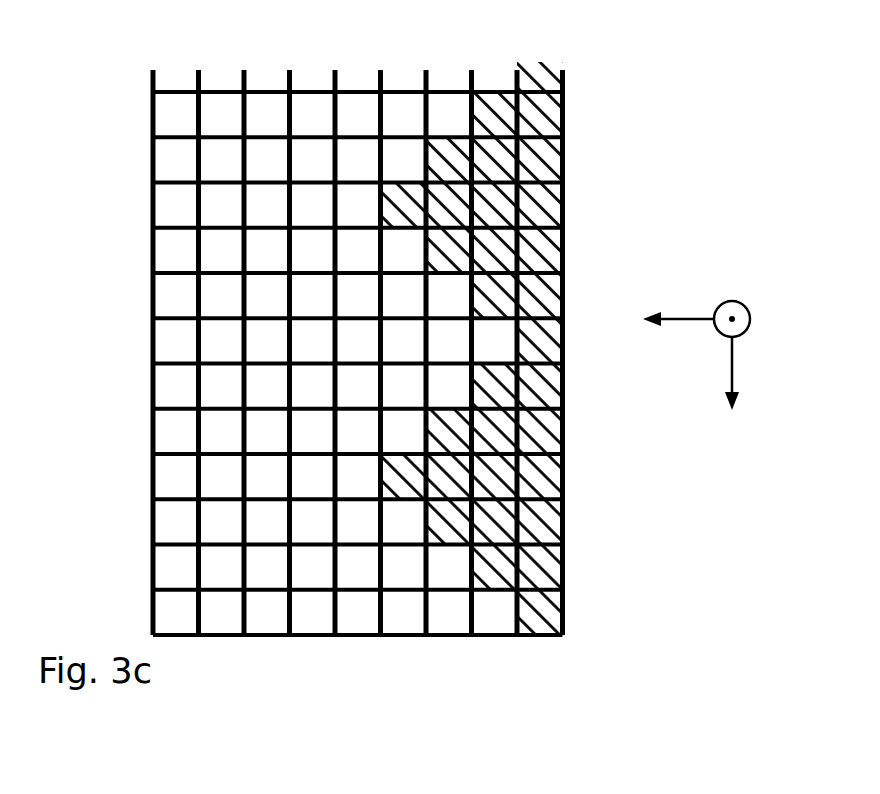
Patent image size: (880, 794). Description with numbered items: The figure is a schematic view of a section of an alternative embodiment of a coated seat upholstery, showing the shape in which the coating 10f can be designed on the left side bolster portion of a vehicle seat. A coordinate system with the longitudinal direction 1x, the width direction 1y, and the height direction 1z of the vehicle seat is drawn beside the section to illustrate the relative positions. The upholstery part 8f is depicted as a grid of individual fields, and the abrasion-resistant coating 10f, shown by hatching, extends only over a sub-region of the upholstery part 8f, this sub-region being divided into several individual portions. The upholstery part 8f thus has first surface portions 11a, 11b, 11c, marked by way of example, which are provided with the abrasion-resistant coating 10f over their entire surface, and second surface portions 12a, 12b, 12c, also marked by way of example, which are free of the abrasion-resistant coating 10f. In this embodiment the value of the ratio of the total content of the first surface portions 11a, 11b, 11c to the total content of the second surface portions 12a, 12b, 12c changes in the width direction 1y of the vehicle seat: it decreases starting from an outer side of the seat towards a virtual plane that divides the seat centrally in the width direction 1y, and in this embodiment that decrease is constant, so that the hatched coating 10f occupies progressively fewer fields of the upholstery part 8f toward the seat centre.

The upholstery part 8f is at (358, 363).
The coating 10f is at (519, 360).
The first surface portion 11a is at (493, 107).
The first surface portion 11b is at (547, 117).
The first surface portion 11c is at (540, 163).
The second surface portion 12a is at (220, 115).
The second surface portion 12b is at (273, 117).
The second surface portion 12c is at (318, 115).
The longitudinal direction 1x is at (735, 372).
The width direction 1y is at (686, 318).
The height direction 1z is at (752, 316).